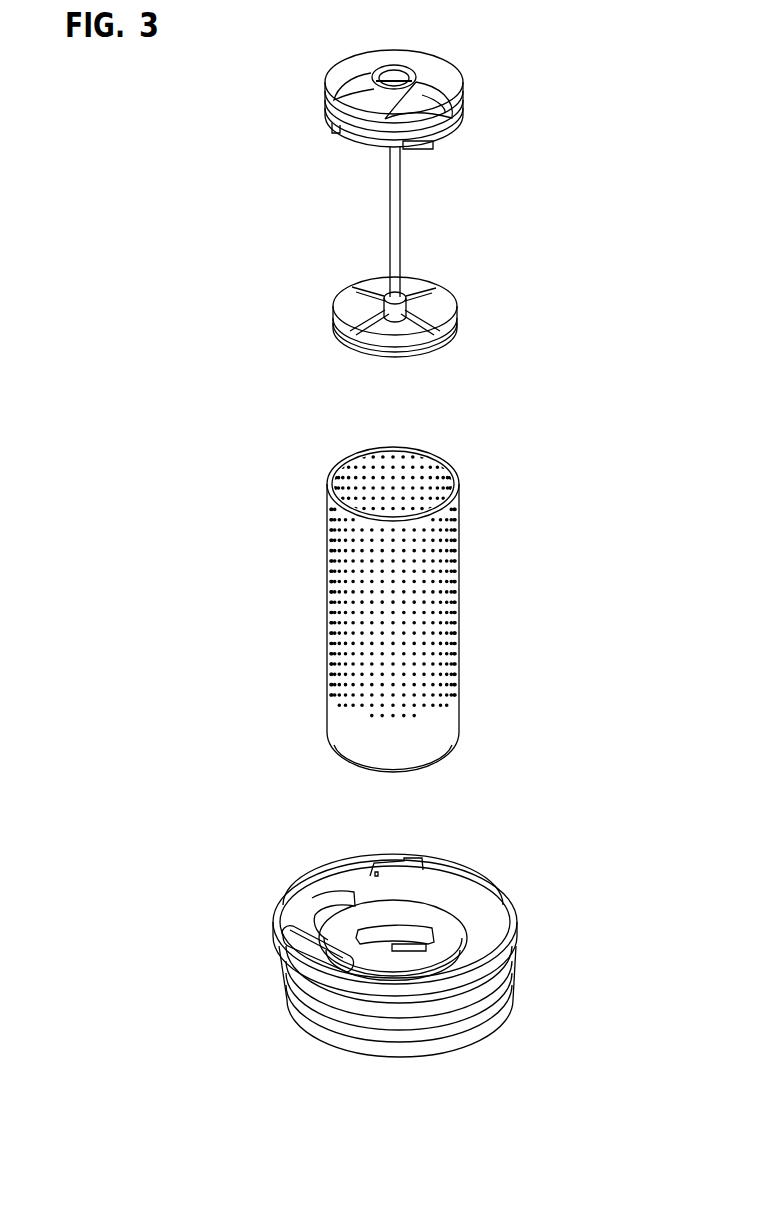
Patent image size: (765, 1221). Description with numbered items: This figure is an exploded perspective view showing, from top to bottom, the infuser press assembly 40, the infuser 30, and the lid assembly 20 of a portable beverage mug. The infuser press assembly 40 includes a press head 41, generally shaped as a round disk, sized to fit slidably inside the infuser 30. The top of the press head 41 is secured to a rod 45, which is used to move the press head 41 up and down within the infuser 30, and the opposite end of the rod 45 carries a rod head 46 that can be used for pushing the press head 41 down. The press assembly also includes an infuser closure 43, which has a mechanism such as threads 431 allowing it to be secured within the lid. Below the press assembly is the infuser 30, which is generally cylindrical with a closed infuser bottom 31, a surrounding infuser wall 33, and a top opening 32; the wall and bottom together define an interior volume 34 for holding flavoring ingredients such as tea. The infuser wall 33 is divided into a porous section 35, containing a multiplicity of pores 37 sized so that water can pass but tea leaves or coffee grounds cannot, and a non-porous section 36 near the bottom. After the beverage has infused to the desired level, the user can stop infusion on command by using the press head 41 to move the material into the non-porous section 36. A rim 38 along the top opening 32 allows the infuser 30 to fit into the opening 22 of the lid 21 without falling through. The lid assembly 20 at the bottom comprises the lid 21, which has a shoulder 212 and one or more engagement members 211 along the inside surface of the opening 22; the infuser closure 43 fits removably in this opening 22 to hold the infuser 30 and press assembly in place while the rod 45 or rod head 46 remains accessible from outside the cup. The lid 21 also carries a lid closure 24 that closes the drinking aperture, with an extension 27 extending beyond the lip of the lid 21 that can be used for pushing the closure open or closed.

The lid assembly 20 is at (198, 888).
The lid 21 is at (488, 920).
The engagement members 211 is at (372, 930).
The shoulder 212 is at (420, 945).
The opening 22 is at (402, 955).
The lid closure 24 is at (330, 905).
The extension 27 is at (297, 952).
The infuser 30 is at (228, 587).
The closed infuser bottom 31 is at (420, 768).
The top opening 32 is at (457, 498).
The infuser wall 33 is at (458, 565).
The interior volume 34 is at (405, 470).
The porous section 35 is at (447, 640).
The non-porous section 36 is at (452, 713).
The pores 37 is at (380, 643).
The rim 38 is at (343, 460).
The infuser press assembly 40 is at (250, 207).
The press head 41 is at (437, 307).
The infuser closure 43 is at (445, 100).
The threads 431 is at (420, 145).
The rod 45 is at (397, 217).
The rod head 46 is at (390, 72).